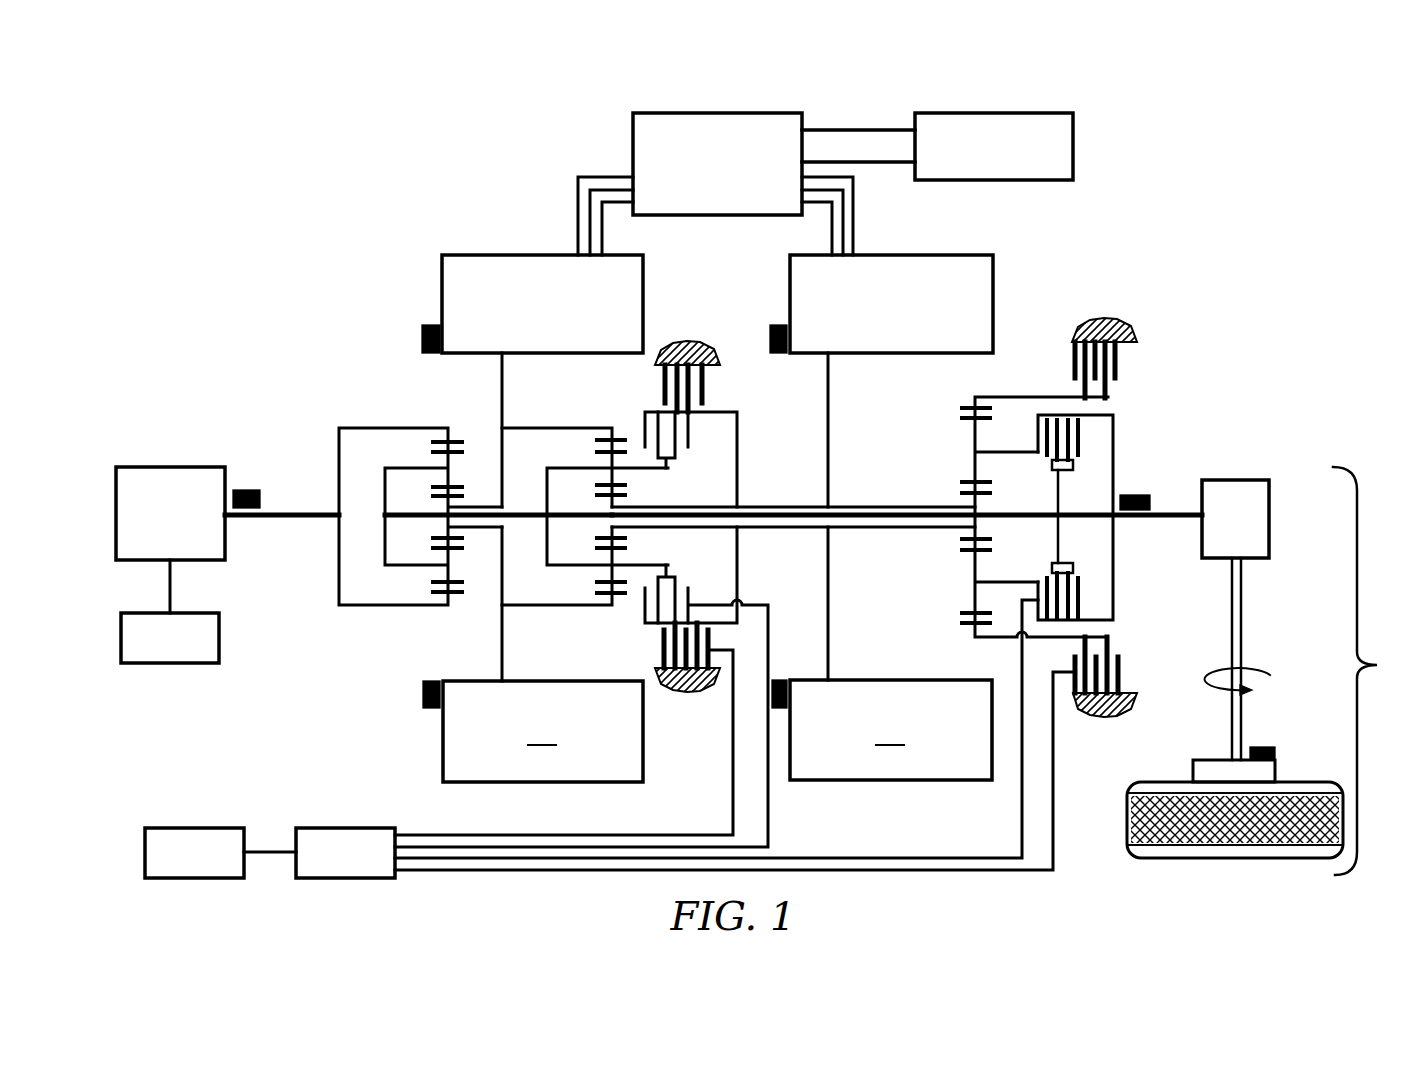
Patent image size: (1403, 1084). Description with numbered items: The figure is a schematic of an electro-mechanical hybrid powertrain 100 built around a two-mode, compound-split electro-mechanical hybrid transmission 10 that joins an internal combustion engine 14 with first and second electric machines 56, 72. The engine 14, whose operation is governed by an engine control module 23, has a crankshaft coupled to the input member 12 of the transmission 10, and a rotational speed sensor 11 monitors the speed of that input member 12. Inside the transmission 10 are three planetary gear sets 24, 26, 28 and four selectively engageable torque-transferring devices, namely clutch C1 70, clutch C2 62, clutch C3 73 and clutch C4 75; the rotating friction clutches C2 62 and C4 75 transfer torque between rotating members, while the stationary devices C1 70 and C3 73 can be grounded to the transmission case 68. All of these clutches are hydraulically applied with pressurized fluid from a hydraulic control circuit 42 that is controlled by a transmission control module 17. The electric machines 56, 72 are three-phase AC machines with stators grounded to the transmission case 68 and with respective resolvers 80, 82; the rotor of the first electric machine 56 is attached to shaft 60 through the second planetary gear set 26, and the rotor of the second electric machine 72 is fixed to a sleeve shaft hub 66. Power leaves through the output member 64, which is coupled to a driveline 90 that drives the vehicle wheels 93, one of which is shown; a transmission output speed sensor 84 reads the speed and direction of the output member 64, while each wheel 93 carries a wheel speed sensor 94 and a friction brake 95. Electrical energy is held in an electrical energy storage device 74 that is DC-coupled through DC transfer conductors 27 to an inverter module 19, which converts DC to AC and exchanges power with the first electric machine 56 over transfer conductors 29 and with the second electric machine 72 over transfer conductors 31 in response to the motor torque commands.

The electro-mechanical hybrid powertrain 100 is at (315, 222).
The electro-mechanical hybrid transmission 10 is at (398, 212).
The inverter module 19 is at (633, 128).
The DC transfer conductors 27 is at (815, 128).
The electrical energy storage device 74 is at (1076, 130).
The transfer conductors 29 is at (578, 212).
The transfer conductors 31 is at (855, 210).
The first electric machine 56 is at (442, 290).
The second electric machine 72 is at (993, 278).
The resolver 80 is at (422, 338).
The resolver 82 is at (778, 325).
The internal combustion engine 14 is at (183, 467).
The engine control module 23 is at (219, 655).
The rotational speed sensor 11 is at (247, 490).
The input member 12 is at (298, 512).
The first planetary gear set 24 is at (437, 408).
The second planetary gear set 26 is at (607, 408).
The third planetary gear set 28 is at (968, 393).
The sleeve shaft hub 66 is at (868, 507).
The shaft 60 is at (1030, 513).
The clutch C4 75 is at (692, 450).
The clutch C3 73 is at (712, 385).
The transmission case 68 is at (690, 343).
The clutch C1 70 is at (1073, 365).
The clutch C2 62 is at (1085, 455).
The transmission output speed sensor 84 is at (1140, 495).
The output member 64 is at (1170, 513).
The driveline 90 is at (1265, 671).
The vehicle wheel 93 is at (1193, 770).
The wheel speed sensor 94 is at (1265, 747).
The friction brake 95 is at (1290, 768).
The transmission control module 17 is at (185, 828).
The hydraulic control circuit 42 is at (313, 828).